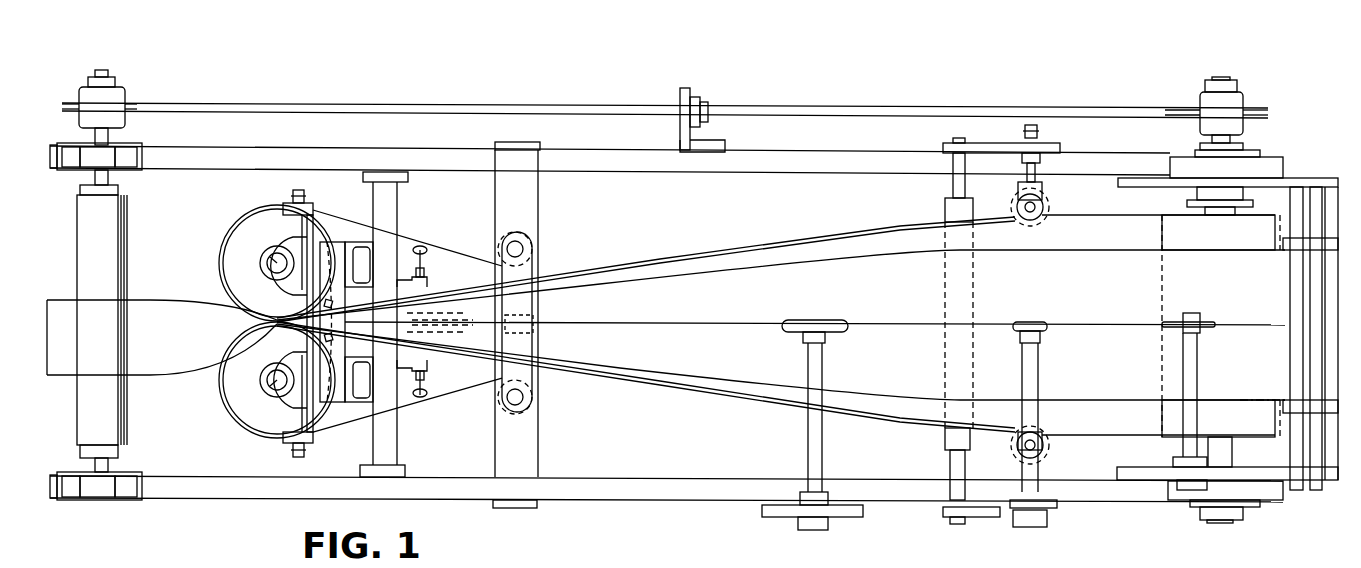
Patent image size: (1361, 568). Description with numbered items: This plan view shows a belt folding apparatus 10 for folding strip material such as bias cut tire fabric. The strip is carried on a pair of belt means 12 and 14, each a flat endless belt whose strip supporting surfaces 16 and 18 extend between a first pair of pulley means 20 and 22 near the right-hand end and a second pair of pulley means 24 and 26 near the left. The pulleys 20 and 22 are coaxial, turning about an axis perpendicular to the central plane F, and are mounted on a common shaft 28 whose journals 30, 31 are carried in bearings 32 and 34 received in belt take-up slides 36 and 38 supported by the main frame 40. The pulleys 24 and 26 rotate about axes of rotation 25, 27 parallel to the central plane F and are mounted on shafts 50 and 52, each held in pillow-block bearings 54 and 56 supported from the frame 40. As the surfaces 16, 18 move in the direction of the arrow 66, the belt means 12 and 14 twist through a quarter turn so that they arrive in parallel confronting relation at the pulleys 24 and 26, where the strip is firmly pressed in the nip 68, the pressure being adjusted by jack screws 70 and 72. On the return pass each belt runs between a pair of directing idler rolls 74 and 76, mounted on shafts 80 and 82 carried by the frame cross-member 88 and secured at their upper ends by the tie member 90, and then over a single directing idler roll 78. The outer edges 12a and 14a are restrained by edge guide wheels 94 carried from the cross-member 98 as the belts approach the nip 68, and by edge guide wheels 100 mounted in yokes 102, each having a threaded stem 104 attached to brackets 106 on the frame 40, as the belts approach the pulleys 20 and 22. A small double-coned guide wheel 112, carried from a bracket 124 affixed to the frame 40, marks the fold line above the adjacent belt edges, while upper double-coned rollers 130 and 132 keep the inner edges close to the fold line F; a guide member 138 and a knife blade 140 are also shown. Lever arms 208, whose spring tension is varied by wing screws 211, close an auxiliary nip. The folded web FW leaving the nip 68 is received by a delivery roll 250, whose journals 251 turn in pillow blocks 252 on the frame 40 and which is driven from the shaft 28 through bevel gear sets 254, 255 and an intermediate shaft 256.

The belt folding apparatus 10 is at (913, 95).
The belt means 12 is at (430, 255).
The outer edge 12a is at (845, 238).
The belt means 14 is at (410, 406).
The outer edge 14a is at (828, 415).
The strip supporting surface 16 is at (1135, 302).
The strip supporting surface 18 is at (1128, 372).
The pulley means 20 is at (1255, 215).
The pulley means 22 is at (1240, 440).
The pulley means 24 is at (250, 215).
The axis of rotation 25 is at (272, 262).
The pulley means 26 is at (225, 402).
The axis of rotation 27 is at (272, 381).
The common shaft 28 is at (1225, 460).
The journal 30 is at (1210, 192).
The journal 31 is at (1212, 523).
The bearing 32 is at (1250, 150).
The bearing 34 is at (1240, 508).
The belt take-up slide 36 is at (1283, 168).
The belt take-up slide 38 is at (1285, 488).
The main frame 40 is at (597, 500).
The shaft 50 is at (262, 268).
The shaft 52 is at (270, 396).
The pillow-block bearing 54 is at (270, 235).
The pillow-block bearing 56 is at (285, 420).
The arrow 66 is at (925, 297).
The nip 68 is at (255, 312).
The jack screw 70 is at (300, 190).
The jack screw 72 is at (300, 457).
The directing idler roll 74 is at (520, 233).
The directing idler roll 76 is at (527, 412).
The directing idler roll 78 is at (945, 440).
The shaft 80 is at (524, 249).
The shaft 82 is at (524, 399).
The frame cross-member 88 is at (538, 450).
The tie member 90 is at (535, 300).
The edge guide wheel 94 is at (330, 300).
The cross-member 98 is at (340, 242).
The edge guide wheel 100 is at (1049, 210).
The yoke 102 is at (1042, 190).
The threaded stem 104 is at (1024, 130).
The bracket 106 is at (1062, 148).
The guide wheel 112 is at (1195, 315).
The bracket 124 is at (1150, 482).
The upper double-coned roller 130 is at (1025, 322).
The upper double-coned roller 132 is at (812, 320).
The guide member 138 is at (535, 335).
The knife blade 140 is at (455, 340).
The lever arm 208 is at (428, 280).
The wing screw 211 is at (428, 392).
The delivery roll 250 is at (127, 248).
The journal 251 is at (95, 182).
The pillow block 252 is at (98, 500).
The bevel gear set 254 is at (120, 88).
The bevel gear set 255 is at (1240, 90).
The intermediate shaft 256 is at (521, 108).
The central plane F is at (660, 325).
The folded web FW is at (55, 298).